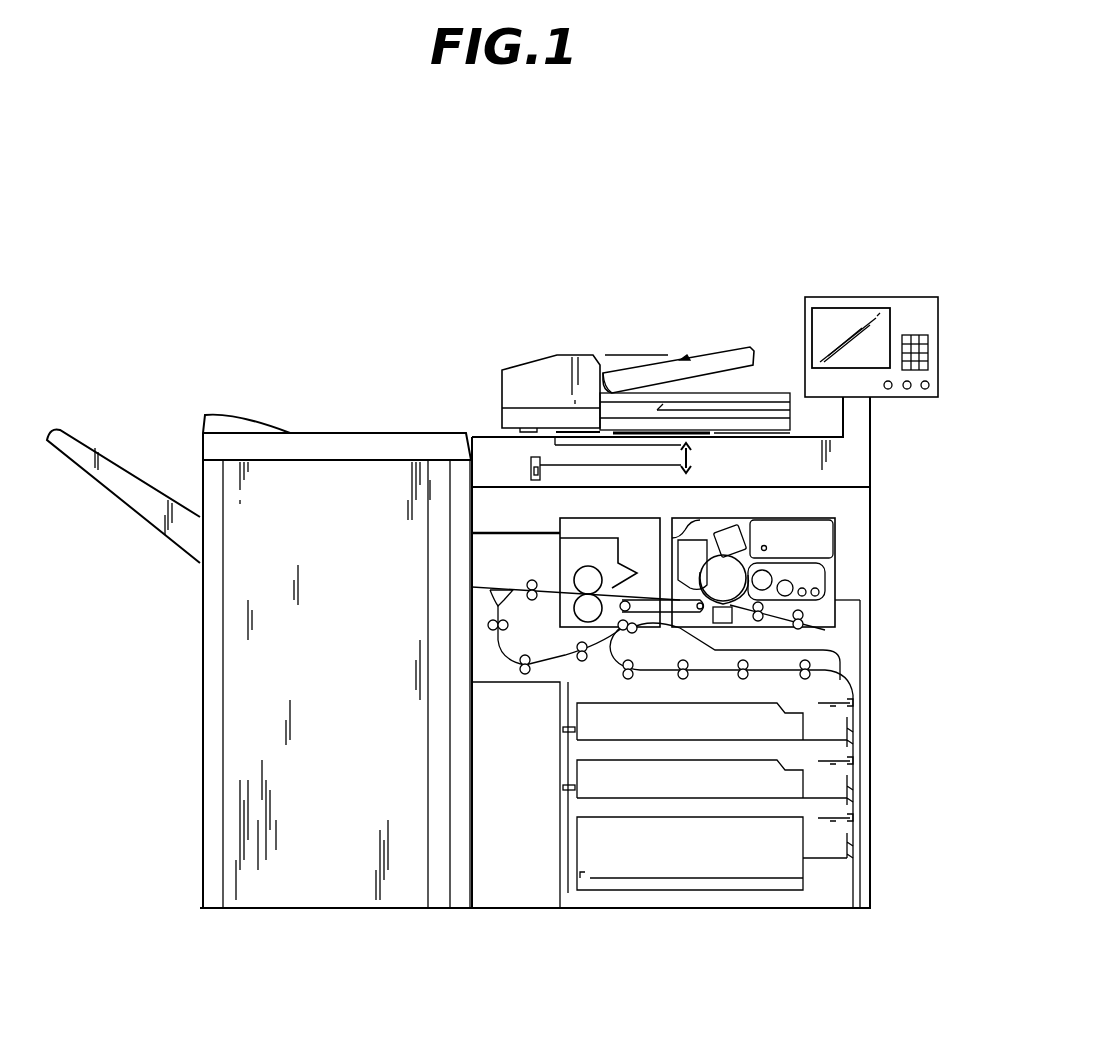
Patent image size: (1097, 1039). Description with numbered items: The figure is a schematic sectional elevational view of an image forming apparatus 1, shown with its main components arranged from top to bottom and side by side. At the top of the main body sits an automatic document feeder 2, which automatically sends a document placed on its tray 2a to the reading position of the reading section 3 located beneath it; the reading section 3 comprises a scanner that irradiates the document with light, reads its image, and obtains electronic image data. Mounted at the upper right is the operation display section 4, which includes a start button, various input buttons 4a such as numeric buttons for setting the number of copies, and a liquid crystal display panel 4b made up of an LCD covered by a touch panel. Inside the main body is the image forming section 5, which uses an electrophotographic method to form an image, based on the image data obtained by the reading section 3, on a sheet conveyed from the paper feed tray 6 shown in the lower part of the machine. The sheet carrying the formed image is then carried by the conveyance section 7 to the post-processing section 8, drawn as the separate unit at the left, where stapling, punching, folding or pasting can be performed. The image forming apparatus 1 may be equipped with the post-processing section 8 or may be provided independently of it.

The image forming apparatus 1 is at (748, 233).
The automatic document feeder 2 is at (540, 362).
The tray 2a is at (718, 348).
The reading section 3 is at (517, 467).
The operation display section 4 is at (874, 296).
The input buttons 4a is at (920, 370).
The liquid crystal display panel 4b is at (856, 307).
The image forming section 5 is at (841, 538).
The paper feed tray 6 is at (590, 727).
The conveyance section 7 is at (598, 672).
The post-processing section 8 is at (312, 908).